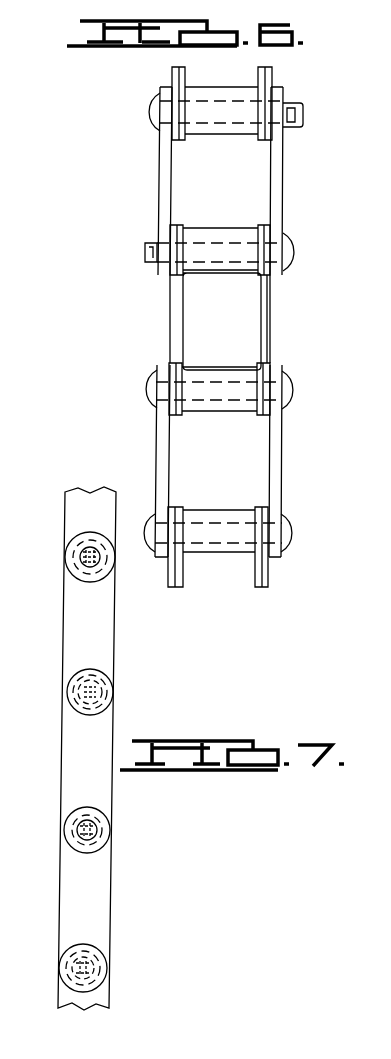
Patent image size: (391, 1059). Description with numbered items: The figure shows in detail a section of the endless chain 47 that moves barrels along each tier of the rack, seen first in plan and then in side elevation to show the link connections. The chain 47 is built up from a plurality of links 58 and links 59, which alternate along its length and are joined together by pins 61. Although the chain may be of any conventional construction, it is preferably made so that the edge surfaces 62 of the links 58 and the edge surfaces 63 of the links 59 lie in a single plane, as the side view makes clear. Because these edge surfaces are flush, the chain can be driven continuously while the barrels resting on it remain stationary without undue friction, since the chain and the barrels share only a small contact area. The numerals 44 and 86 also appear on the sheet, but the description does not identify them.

In FIG. 6, the conveyor frame 44 is at (9, 351).
In FIG. 6, the chain 47 is at (292, 460).
In FIG. 6, the link 58 is at (283, 428).
In FIG. 7, the link 58 is at (97, 898).
In FIG. 6, the link 59 is at (272, 318).
In FIG. 7, the link 59 is at (108, 802).
In FIG. 6, the pin 61 is at (290, 245).
In FIG. 6, the edge surface 62 is at (158, 443).
In FIG. 7, the edge surface 62 is at (65, 607).
In FIG. 6, the edge surface 63 is at (175, 325).
In FIG. 7, the edge surface 63 is at (65, 745).
In FIG. 6, the roller 86 is at (142, 103).